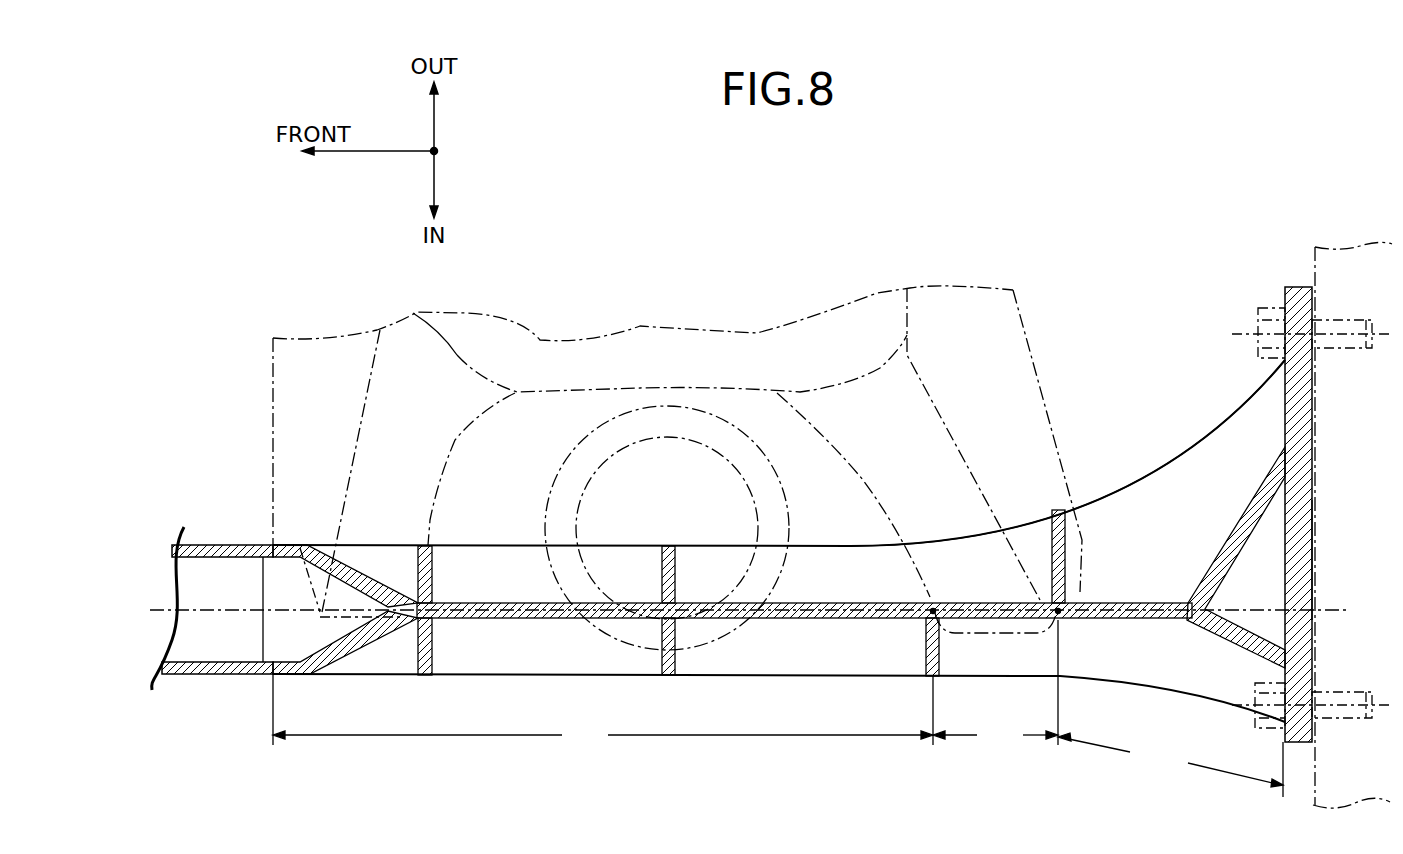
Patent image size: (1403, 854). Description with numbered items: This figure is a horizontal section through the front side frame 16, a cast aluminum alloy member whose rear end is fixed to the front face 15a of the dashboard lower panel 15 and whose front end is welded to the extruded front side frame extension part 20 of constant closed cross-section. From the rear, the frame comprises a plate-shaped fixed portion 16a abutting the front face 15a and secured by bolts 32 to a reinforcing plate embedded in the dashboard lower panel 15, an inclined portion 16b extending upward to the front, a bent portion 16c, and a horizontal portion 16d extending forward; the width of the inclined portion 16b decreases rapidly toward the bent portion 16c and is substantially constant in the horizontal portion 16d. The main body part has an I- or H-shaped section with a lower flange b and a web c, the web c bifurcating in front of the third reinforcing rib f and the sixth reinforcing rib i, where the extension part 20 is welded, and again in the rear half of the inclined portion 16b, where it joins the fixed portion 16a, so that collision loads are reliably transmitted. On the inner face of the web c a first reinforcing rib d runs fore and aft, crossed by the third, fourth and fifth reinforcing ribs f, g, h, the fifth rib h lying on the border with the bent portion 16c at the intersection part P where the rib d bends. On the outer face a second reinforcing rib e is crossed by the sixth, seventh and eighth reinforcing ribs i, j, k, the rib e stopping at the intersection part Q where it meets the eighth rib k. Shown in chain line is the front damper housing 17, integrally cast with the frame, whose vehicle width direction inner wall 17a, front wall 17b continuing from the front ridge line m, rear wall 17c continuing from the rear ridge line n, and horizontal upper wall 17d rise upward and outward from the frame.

The dashboard lower panel 15 is at (1308, 262).
The front face of dashboard lower panel 15a is at (1314, 553).
The front side frame 16 is at (828, 542).
The fixed portion 16a is at (1305, 408).
The inclined portion 16b is at (1170, 765).
The bent portion 16c is at (995, 685).
The horizontal portion 16d is at (603, 712).
The front damper housing 17 is at (1025, 331).
The vehicle width direction inner wall 17a is at (618, 345).
The front wall 17b is at (378, 440).
The rear wall 17c is at (1032, 421).
The upper wall 17d is at (760, 410).
The front side frame extension part 20 is at (232, 546).
The bolts 32 is at (1262, 330).
The lower flange b is at (1145, 489).
The web c is at (340, 648).
The first reinforcing rib d is at (390, 660).
The second reinforcing rib e is at (388, 556).
The third reinforcing rib f is at (428, 647).
The fourth reinforcing rib g is at (665, 653).
The fifth reinforcing rib h is at (940, 641).
The sixth reinforcing rib i is at (435, 583).
The seventh reinforcing rib j is at (665, 572).
The eighth reinforcing rib k is at (1050, 528).
The front ridge line m is at (457, 355).
The rear ridge line n is at (905, 308).
The intersection part P is at (935, 610).
The intersection part Q is at (1061, 609).